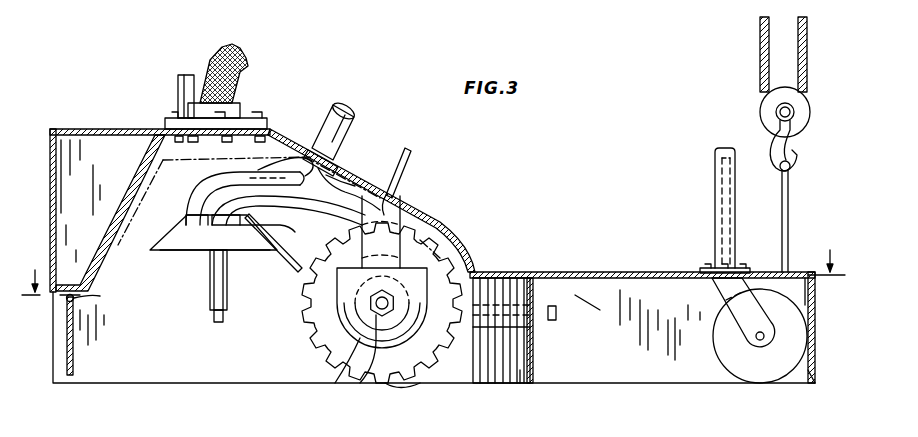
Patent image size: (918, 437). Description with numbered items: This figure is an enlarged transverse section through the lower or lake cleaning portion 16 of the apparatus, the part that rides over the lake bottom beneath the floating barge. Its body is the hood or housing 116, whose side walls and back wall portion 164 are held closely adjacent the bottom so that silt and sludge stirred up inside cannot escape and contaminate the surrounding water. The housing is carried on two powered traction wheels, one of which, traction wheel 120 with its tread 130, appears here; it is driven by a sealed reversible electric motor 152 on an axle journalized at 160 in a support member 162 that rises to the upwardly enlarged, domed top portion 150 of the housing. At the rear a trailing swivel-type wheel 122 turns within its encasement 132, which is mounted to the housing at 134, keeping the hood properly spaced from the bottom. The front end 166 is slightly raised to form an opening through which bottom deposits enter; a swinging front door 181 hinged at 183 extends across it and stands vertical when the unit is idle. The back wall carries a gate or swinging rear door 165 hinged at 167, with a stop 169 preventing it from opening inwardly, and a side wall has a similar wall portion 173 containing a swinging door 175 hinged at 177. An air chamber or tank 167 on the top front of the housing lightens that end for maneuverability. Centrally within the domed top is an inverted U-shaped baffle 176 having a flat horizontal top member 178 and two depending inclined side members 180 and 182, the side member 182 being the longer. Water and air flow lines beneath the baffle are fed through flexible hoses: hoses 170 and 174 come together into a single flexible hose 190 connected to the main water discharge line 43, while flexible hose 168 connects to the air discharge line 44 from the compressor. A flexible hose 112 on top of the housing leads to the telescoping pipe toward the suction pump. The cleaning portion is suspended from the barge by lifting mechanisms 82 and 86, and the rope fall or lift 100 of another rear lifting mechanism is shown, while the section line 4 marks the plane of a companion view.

The section line 4 is at (433, 263).
The cleaning portion 16 is at (468, 215).
The main water discharge line 43 is at (355, 135).
The air discharge line 44 is at (411, 152).
The lifting mechanism 82 is at (178, 85).
The lifting mechanism 86 is at (808, 110).
The rope fall or lift 100 is at (770, 33).
The flexible hose 112 is at (210, 52).
The hood or housing structure 116 is at (568, 272).
The traction wheel 120 is at (327, 330).
The trailing swivel-type wheel 122 is at (760, 380).
The tread 130 is at (420, 385).
The encasement 132 is at (715, 172).
The mounting 134 is at (712, 268).
The domed top portion 150 is at (428, 218).
The sealed reversible electric motor 152 is at (350, 345).
The journal 160 is at (376, 345).
The support member 162 is at (337, 300).
The back wall portion 164 is at (814, 290).
The swinging rear door 165 is at (818, 370).
The front end opening 166 is at (60, 345).
The air chamber or tank 167 is at (84, 140).
The flexible hose 168 is at (340, 212).
The stop 169 is at (806, 300).
The flexible hose 170 is at (225, 182).
The wall portion 173 is at (500, 290).
The flexible hose 174 is at (254, 225).
The swinging door 175 is at (520, 370).
The inverted U-shaped baffle 176 is at (176, 256).
The hinge 177 is at (558, 312).
The top member 178 is at (198, 215).
The side member 180 is at (184, 222).
The front door 181 is at (75, 360).
The side member 182 is at (300, 233).
The hinge 183 is at (100, 296).
The flexible hose 190 is at (283, 172).